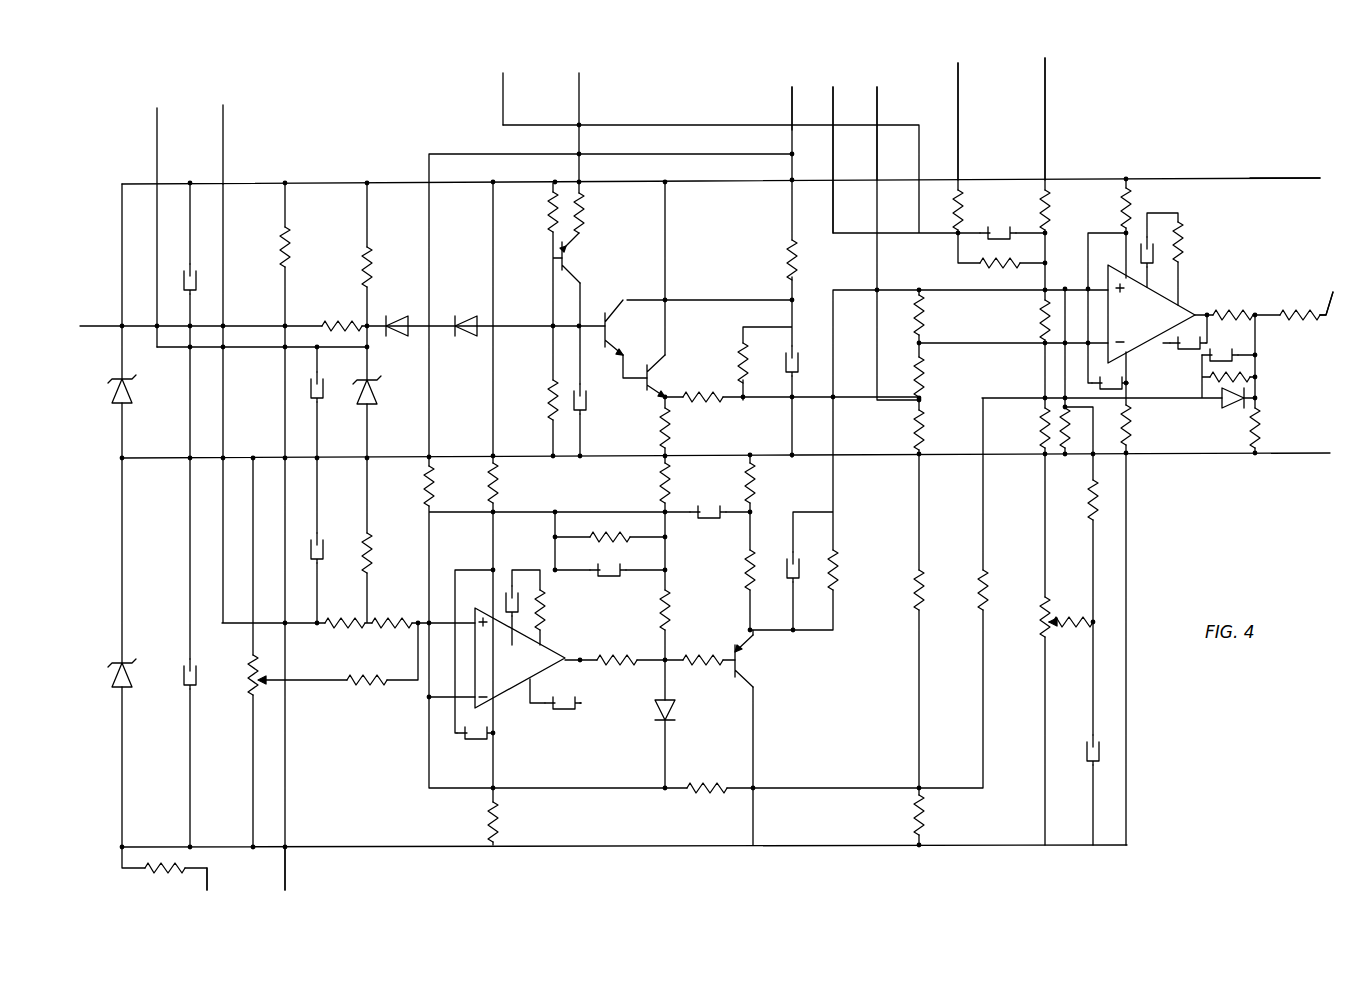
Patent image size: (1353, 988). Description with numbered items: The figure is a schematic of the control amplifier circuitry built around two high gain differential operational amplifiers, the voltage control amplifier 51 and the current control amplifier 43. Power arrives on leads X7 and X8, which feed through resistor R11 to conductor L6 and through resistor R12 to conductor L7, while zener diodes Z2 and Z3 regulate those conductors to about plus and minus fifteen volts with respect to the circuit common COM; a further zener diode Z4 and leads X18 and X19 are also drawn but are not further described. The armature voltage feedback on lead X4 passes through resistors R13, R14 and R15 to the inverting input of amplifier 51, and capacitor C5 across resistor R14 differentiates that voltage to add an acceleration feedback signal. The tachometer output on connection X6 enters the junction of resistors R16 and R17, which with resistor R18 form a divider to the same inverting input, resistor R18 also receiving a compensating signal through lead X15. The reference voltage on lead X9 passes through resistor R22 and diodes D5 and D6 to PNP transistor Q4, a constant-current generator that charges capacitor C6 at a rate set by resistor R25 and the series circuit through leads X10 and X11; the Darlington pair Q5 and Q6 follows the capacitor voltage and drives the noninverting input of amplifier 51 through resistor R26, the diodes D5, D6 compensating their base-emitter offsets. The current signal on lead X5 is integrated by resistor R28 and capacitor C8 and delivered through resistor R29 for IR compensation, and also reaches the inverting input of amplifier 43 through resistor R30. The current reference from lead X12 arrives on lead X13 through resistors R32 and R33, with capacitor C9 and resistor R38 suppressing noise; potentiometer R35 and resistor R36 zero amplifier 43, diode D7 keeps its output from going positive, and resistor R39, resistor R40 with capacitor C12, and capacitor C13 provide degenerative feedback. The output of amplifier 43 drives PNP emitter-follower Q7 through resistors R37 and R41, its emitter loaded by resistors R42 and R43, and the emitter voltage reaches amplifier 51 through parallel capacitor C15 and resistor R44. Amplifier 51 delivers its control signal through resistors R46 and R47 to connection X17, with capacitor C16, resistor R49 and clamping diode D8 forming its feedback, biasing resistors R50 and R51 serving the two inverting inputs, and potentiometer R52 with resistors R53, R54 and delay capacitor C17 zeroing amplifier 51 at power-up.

The conductor L7 is at (312, 182).
The conductor L6 is at (530, 847).
The circuit common COM is at (1272, 455).
The lead X4 is at (959, 160).
The lead X5 is at (790, 110).
The tachometer feedback connection X6 is at (878, 110).
The lead X7 is at (214, 877).
The lead X8 is at (292, 875).
The lead X9 is at (96, 317).
The lead X10 is at (580, 110).
The lead X11 is at (1258, 177).
The lead X12 is at (158, 170).
The lead X13 is at (224, 165).
The lead X15 is at (504, 110).
The connection X17 is at (1319, 294).
The terminal X18 is at (842, 114).
The terminal X19 is at (1046, 155).
The resistor R11 is at (173, 876).
The resistor R12 is at (285, 258).
The resistor R13 is at (959, 217).
The resistor R14 is at (1006, 274).
The resistor R15 is at (1042, 322).
The resistor R16 is at (921, 432).
The resistor R17 is at (921, 378).
The resistor R18 is at (921, 318).
The resistor R22 is at (358, 318).
The resistor R25 is at (583, 216).
The resistor R26 is at (700, 388).
The resistor R28 is at (786, 259).
The resistor R29 is at (730, 340).
The resistor R30 is at (431, 490).
The resistor R32 is at (357, 616).
The resistor R33 is at (408, 616).
The potentiometer R35 is at (250, 666).
The resistor R36 is at (352, 686).
The resistor R37 is at (625, 652).
The resistor R38 is at (369, 550).
The resistor R39 is at (667, 610).
The resistor R40 is at (620, 542).
The resistor R41 is at (686, 652).
The resistor R42 is at (752, 570).
The resistor R43 is at (752, 486).
The resistor R44 is at (835, 572).
The resistor R46 is at (1216, 306).
The resistor R47 is at (1282, 306).
The resistor R49 is at (1252, 377).
The biasing resistor R50 is at (985, 590).
The biasing resistor R51 is at (688, 780).
The potentiometer R52 is at (1040, 622).
The resistor R53 is at (1056, 612).
The resistor R54 is at (1094, 498).
The capacitor C5 is at (994, 216).
The capacitor C6 is at (586, 398).
The capacitor C8 is at (798, 361).
The capacitor C9 is at (320, 550).
The capacitor C12 is at (612, 576).
The capacitor C13 is at (706, 520).
The capacitor C15 is at (796, 578).
The capacitor C16 is at (1246, 342).
The capacitor C17 is at (1099, 750).
The diode D5 is at (402, 316).
The diode D6 is at (472, 316).
The diode D7 is at (672, 712).
The diode D8 is at (1228, 408).
The zener diode Z2 is at (110, 392).
The zener diode Z3 is at (110, 676).
The zener diode Z4 is at (378, 392).
The PNP transistor Q4 is at (563, 262).
The NPN transistor Q5 is at (606, 332).
The NPN transistor Q6 is at (648, 380).
The PNP transistor Q7 is at (736, 668).
The current control amplifier 43 is at (500, 710).
The voltage control amplifier 51 is at (1138, 362).